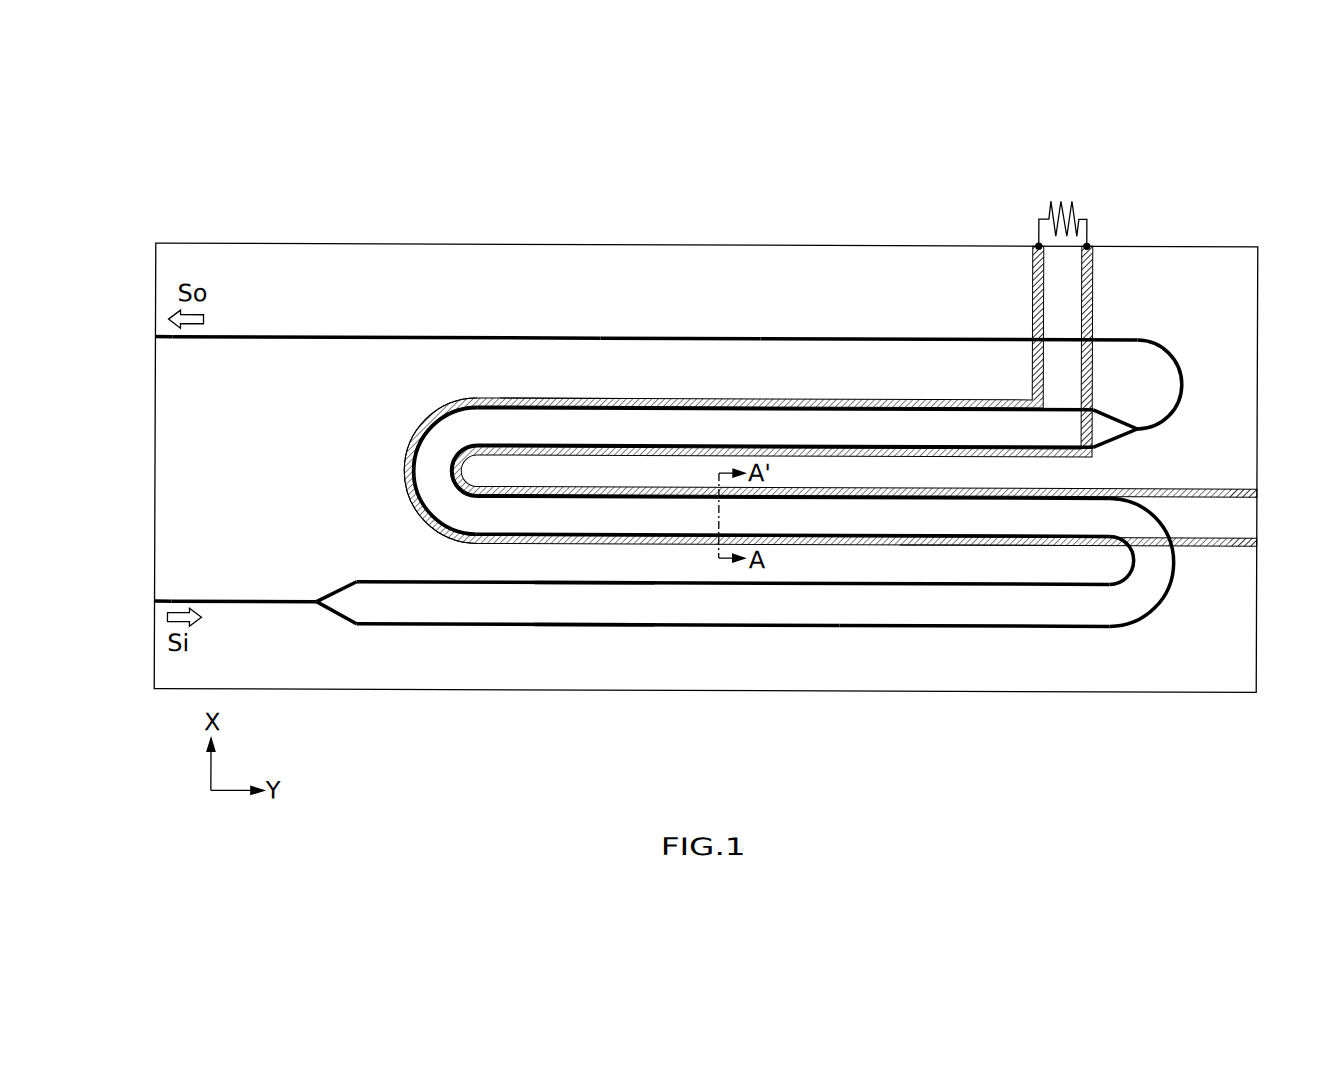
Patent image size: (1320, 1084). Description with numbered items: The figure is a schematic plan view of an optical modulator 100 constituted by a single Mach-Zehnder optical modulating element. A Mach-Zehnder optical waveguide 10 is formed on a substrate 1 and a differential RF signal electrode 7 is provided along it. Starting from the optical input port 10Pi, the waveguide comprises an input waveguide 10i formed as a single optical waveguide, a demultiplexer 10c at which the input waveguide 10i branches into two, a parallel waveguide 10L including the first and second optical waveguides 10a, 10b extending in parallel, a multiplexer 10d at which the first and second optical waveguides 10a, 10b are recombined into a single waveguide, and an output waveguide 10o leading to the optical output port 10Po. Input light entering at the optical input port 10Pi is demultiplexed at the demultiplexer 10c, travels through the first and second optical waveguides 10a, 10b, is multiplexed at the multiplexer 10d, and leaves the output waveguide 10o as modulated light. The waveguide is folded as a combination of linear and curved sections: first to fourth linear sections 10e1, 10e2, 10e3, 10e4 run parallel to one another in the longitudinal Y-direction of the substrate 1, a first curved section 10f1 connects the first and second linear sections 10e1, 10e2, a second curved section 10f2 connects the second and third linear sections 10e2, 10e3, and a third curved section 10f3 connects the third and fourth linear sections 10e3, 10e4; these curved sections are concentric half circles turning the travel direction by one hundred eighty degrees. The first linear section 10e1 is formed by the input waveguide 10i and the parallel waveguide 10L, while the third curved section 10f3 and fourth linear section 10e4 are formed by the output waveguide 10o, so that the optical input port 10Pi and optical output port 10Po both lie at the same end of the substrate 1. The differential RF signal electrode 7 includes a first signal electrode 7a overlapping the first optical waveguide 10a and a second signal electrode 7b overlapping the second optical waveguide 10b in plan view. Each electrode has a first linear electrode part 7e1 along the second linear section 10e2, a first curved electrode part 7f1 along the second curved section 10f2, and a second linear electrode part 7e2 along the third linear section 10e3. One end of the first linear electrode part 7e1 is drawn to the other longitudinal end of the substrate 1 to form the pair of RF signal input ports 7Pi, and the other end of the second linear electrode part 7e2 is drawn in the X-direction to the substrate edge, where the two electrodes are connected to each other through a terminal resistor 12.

The substrate 1 is at (236, 245).
The optical modulator 100 is at (706, 415).
The differential RF signal electrode 7 is at (800, 451).
The first signal electrode 7a is at (887, 447).
The second signal electrode 7b is at (922, 399).
The first linear electrode part 7e1 is at (983, 546).
The second linear electrode part 7e2 is at (553, 397).
The first curved electrode part 7f1 is at (405, 477).
The RF signal input port 7Pi is at (1262, 488).
The Mach-Zehnder optical waveguide 10 is at (664, 498).
The first optical waveguide 10a is at (556, 627).
The second optical waveguide 10b is at (601, 583).
The demultiplexer 10c is at (327, 626).
The multiplexer 10d is at (1128, 445).
The first linear section 10e1 is at (870, 628).
The second linear section 10e2 is at (931, 539).
The third linear section 10e3 is at (622, 397).
The fourth linear section 10e4 is at (683, 336).
The first curved section 10f1 is at (1160, 613).
The second curved section 10f2 is at (409, 448).
The third curved section 10f3 is at (1173, 350).
The input waveguide 10i is at (247, 601).
The output waveguide 10o is at (654, 270).
The parallel waveguide 10L is at (655, 745).
The optical input port 10Pi is at (134, 602).
The optical output port 10Po is at (131, 335).
The terminal resistor 12 is at (1061, 200).